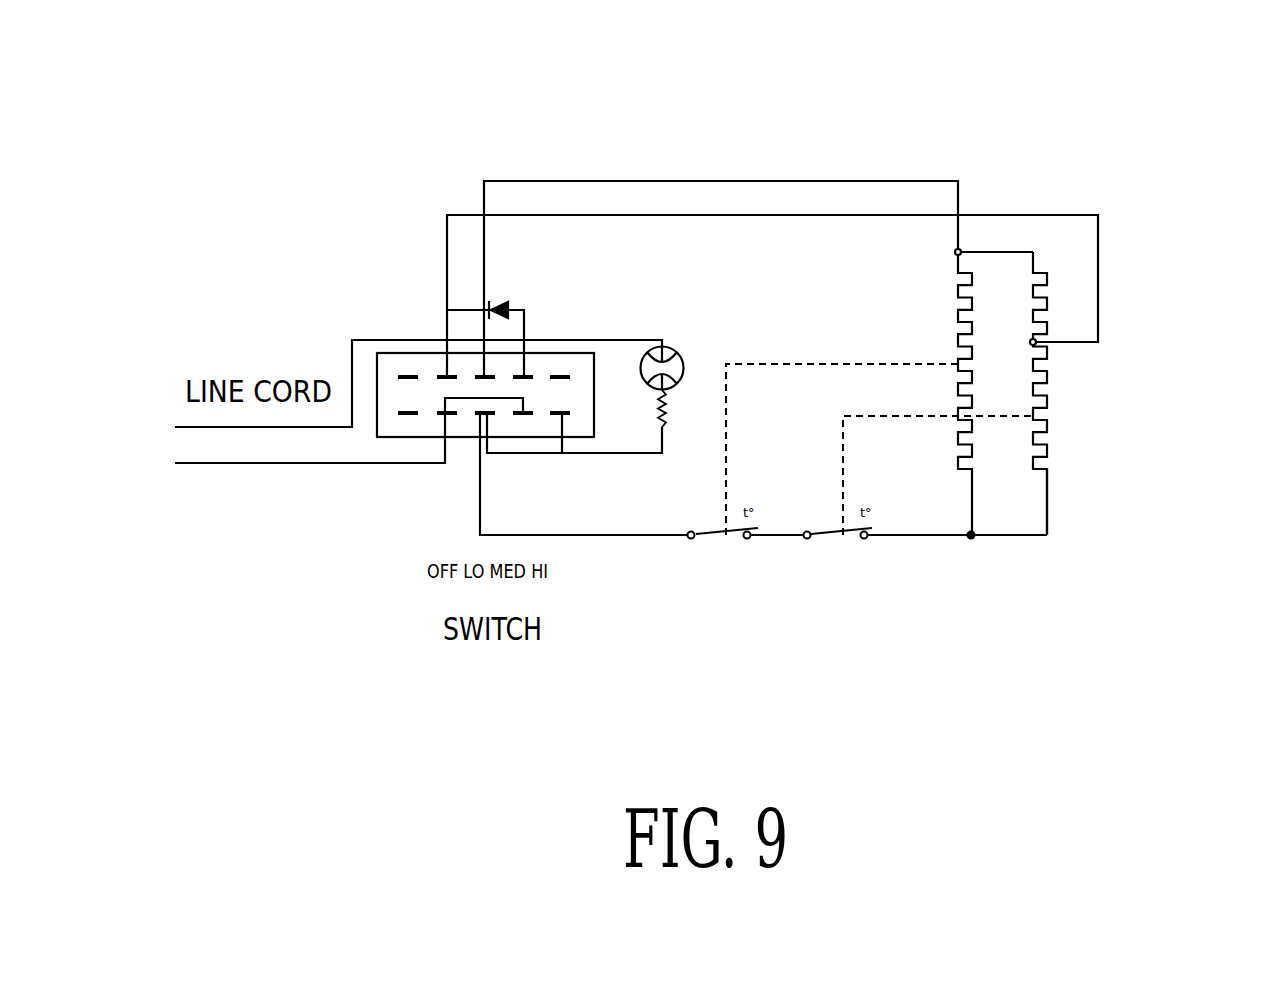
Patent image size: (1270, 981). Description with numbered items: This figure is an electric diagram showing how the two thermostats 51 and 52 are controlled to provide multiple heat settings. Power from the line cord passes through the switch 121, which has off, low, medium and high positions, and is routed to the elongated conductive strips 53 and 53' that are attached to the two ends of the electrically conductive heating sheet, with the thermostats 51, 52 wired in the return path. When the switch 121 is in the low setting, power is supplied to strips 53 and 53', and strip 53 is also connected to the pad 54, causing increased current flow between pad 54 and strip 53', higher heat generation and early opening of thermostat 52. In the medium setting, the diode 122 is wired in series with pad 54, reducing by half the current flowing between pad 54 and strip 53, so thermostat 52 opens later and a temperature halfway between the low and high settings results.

The switch 121 is at (413, 468).
The diode 122 is at (547, 211).
The thermostat 51 is at (681, 592).
The thermostat 52 is at (888, 601).
The elongated conductive strip 53 is at (1051, 279).
The elongated conductive strip 53' is at (1071, 607).
The pad 54 is at (1138, 393).